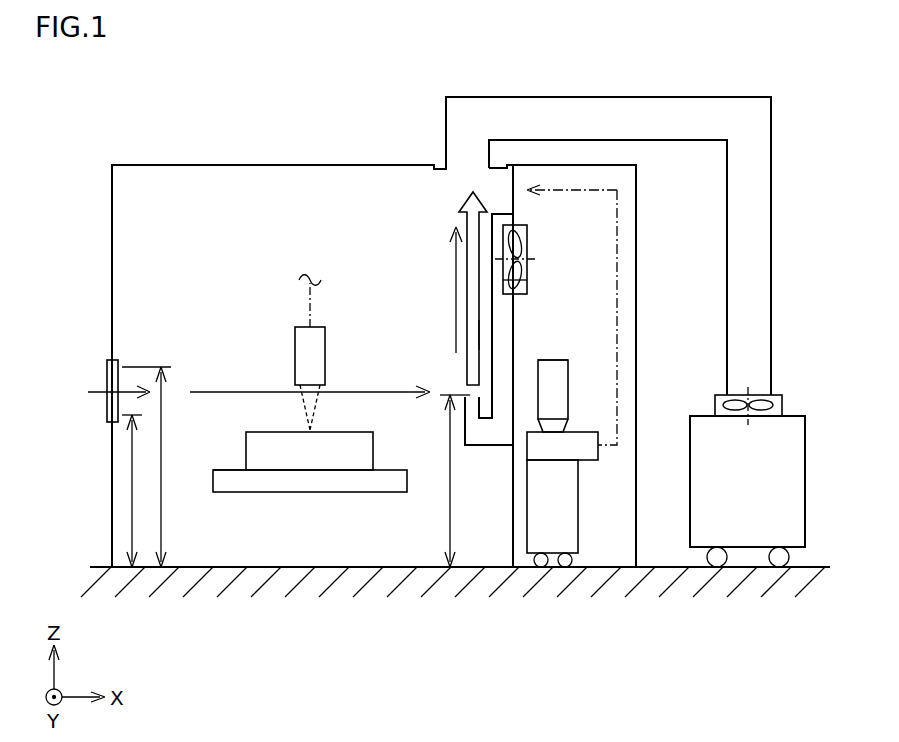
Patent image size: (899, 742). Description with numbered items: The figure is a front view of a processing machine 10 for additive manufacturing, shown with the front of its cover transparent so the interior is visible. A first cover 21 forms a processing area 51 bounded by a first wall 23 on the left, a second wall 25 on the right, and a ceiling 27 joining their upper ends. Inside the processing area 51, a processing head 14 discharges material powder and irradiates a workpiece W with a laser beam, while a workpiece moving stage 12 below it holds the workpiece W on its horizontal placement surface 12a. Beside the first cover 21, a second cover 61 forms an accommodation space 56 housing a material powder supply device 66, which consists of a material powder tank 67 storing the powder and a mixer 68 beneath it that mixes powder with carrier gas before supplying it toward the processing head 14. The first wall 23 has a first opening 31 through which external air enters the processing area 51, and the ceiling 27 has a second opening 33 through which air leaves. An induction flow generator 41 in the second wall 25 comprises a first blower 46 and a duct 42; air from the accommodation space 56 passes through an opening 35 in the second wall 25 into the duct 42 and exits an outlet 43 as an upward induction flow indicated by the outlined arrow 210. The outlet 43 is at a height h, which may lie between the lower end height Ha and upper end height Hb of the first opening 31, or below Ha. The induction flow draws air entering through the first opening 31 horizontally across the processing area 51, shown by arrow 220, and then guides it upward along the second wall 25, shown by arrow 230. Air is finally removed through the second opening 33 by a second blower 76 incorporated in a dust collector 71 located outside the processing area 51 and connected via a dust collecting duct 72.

The processing machine 10 is at (145, 128).
The first cover 21 is at (108, 176).
The first wall 23 is at (112, 272).
The processing area 51 is at (234, 180).
The ceiling 27 is at (291, 165).
The arrow 220 is at (367, 391).
The arrow 230 is at (455, 282).
The second opening 33 is at (447, 167).
The induction flow generator 41 is at (503, 213).
The second cover 61 is at (645, 186).
The dust collecting duct 72 is at (771, 258).
The first blower 46 is at (535, 235).
The accommodation space 56 is at (600, 262).
The opening 35 is at (520, 285).
The second wall 25 is at (515, 312).
The outlined arrow 210 is at (480, 333).
The material powder supply device 66 is at (577, 372).
The material powder tank 67 is at (557, 393).
The mixer 68 is at (588, 457).
The second blower 76 is at (783, 403).
The dust collector 71 is at (790, 478).
The processing head 14 is at (303, 357).
The first opening 31 is at (107, 410).
The height of lower end of first opening Ha is at (140, 490).
The height of upper end of first opening Hb is at (161, 468).
The height of outlet h is at (450, 540).
The workpiece W is at (332, 458).
The workpiece moving stage 12 is at (275, 482).
The placement surface 12a is at (228, 468).
The outlet 43 is at (470, 395).
The duct 42 is at (465, 430).